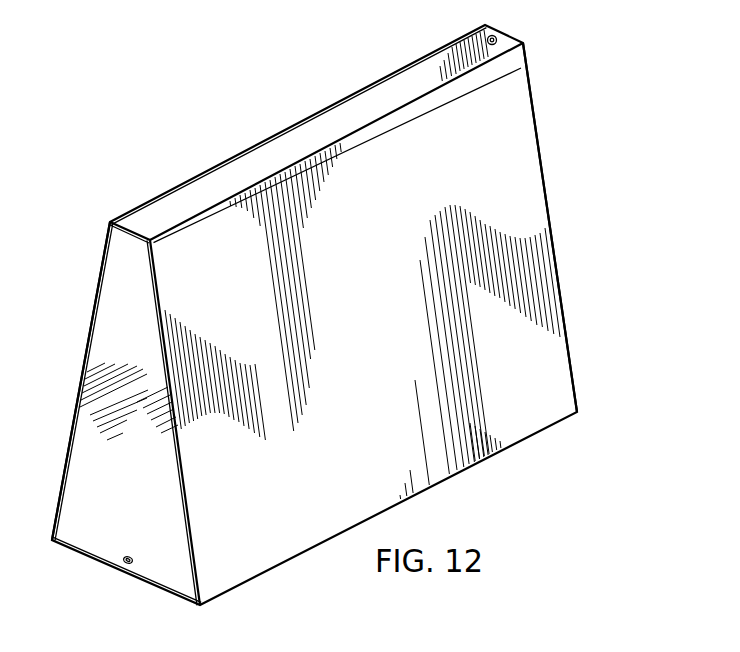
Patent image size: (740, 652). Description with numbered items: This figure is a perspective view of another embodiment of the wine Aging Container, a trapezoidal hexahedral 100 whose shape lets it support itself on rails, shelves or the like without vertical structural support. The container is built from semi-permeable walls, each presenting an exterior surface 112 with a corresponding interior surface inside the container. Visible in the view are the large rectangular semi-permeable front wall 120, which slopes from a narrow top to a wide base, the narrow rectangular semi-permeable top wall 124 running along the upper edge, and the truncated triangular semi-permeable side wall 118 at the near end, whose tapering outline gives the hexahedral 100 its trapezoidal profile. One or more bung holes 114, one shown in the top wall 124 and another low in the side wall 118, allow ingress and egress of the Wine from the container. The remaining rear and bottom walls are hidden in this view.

The trapezoidal hexahedral aging container 100 is at (610, 40).
The exterior surface 112 is at (392, 118).
The bung hole 114 is at (498, 37).
The truncated triangular semi-permeable side wall 118 is at (102, 356).
The rectangular semi-permeable front wall 120 is at (528, 193).
The rectangular semi-permeable top wall 124 is at (432, 77).